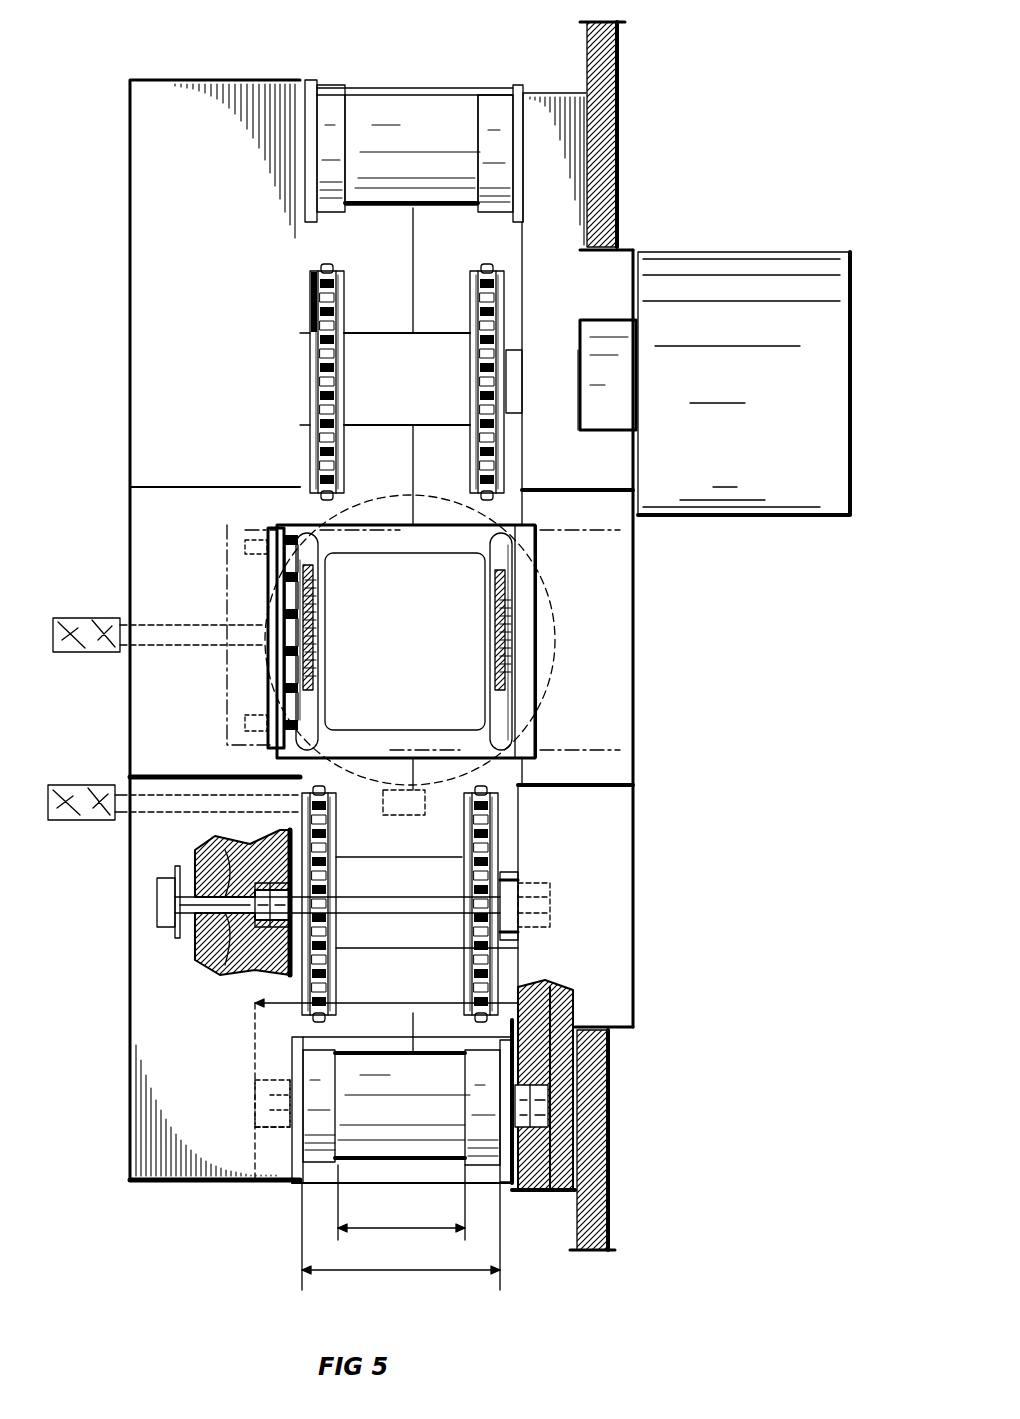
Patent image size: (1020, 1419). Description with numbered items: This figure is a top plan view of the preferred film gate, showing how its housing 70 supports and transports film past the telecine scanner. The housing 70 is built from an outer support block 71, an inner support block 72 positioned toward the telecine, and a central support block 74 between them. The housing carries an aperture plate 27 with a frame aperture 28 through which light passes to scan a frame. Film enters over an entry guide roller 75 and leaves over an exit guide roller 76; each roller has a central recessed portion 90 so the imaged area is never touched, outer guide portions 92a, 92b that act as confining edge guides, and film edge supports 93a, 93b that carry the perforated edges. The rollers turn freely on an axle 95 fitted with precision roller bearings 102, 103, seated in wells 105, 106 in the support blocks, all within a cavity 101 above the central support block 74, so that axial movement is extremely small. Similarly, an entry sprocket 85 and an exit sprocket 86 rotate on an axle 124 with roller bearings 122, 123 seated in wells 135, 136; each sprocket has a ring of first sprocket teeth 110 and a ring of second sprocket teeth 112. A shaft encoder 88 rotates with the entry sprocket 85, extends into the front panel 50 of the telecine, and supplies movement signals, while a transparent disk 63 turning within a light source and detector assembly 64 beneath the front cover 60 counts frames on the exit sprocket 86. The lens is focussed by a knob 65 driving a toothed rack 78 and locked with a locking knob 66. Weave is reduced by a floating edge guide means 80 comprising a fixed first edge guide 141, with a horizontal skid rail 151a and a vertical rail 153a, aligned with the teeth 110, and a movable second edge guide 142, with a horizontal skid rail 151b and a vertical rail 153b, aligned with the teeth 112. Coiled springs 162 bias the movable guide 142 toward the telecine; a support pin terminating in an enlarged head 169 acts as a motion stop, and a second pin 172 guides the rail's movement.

The aperture plate 27 is at (415, 740).
The frame aperture 28 is at (415, 565).
The front panel 50 is at (586, 55).
The front cover 60 is at (130, 197).
The transparent disk 63 is at (177, 933).
The light source and detector assembly 64 is at (157, 903).
The knob 65 is at (100, 785).
The locking knob 66 is at (107, 655).
The housing 70 is at (193, 102).
The outer support block 71 is at (305, 1190).
The inner support block 72 is at (540, 1200).
The central support block 74 is at (375, 88).
The entry guide roller 75 is at (325, 100).
The exit guide roller 76 is at (558, 1195).
The toothed rack 78 is at (403, 815).
The floating edge guide means 80 is at (522, 610).
The entry sprocket 85 is at (313, 290).
The exit sprocket 86 is at (502, 962).
The shaft encoder 88 is at (775, 262).
The central recessed portion 90 is at (440, 92).
The outer guide portion 92a is at (325, 1045).
The outer guide portion 92b is at (460, 1052).
The film edge support 93a is at (328, 1088).
The film edge support 93b is at (458, 1052).
The axle 95 is at (282, 1133).
The cavity 101 is at (512, 265).
The roller bearing 102 is at (258, 1097).
The roller bearing 103 is at (606, 1075).
The well 105 is at (258, 1133).
The well 106 is at (606, 1117).
The ring of first sprocket teeth 110 is at (488, 262).
The ring of second sprocket teeth 112 is at (333, 262).
The roller bearing 122 is at (250, 975).
The roller bearing 123 is at (550, 893).
The axle 124 is at (196, 845).
The well 135 is at (530, 880).
The well 136 is at (213, 960).
The fixed first edge guide 141 is at (510, 668).
The movable second edge guide 142 is at (265, 688).
The horizontal skid rail 151a is at (495, 605).
The horizontal skid rail 151b is at (310, 640).
The vertical rail 153a is at (505, 630).
The vertical rail 153b is at (305, 578).
The coiled springs 162 is at (285, 612).
The enlarged head 169 is at (245, 727).
The second pin 172 is at (312, 600).